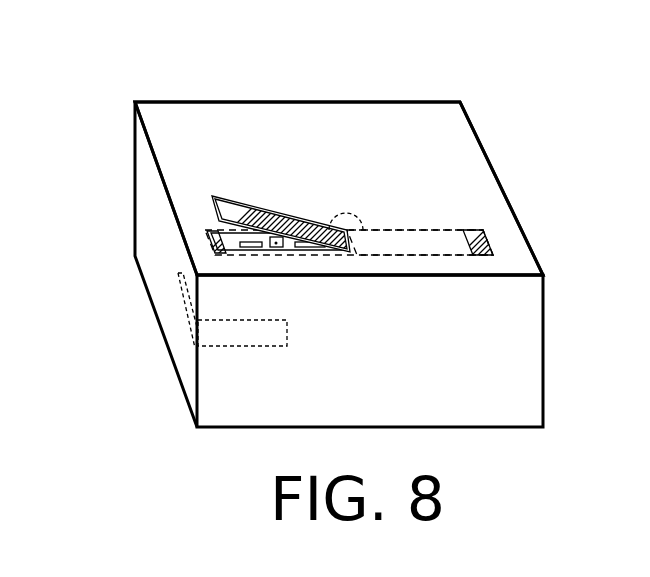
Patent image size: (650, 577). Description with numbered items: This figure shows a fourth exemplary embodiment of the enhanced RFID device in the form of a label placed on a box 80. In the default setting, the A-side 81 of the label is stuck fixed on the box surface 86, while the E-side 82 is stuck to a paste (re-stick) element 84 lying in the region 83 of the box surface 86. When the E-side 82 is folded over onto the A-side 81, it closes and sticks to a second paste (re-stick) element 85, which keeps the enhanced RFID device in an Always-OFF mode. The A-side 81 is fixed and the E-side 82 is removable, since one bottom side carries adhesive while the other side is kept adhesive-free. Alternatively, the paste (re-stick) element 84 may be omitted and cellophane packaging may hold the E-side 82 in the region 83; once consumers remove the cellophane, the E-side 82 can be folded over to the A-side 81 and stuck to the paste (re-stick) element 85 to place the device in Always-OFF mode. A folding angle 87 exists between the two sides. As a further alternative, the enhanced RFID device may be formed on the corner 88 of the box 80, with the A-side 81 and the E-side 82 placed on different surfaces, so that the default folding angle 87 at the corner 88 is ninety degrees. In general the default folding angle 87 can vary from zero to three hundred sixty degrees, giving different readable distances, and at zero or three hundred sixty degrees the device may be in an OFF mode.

The box 80 is at (107, 62).
The A-side 81 is at (267, 250).
The E-side 82 is at (277, 210).
The region 83 is at (397, 238).
The paste (re-stick) element 84 is at (473, 235).
The paste (re-stick) element 85 is at (210, 230).
The box surface 86 is at (437, 128).
The folding angle 87 is at (345, 213).
The corner 88 is at (217, 333).